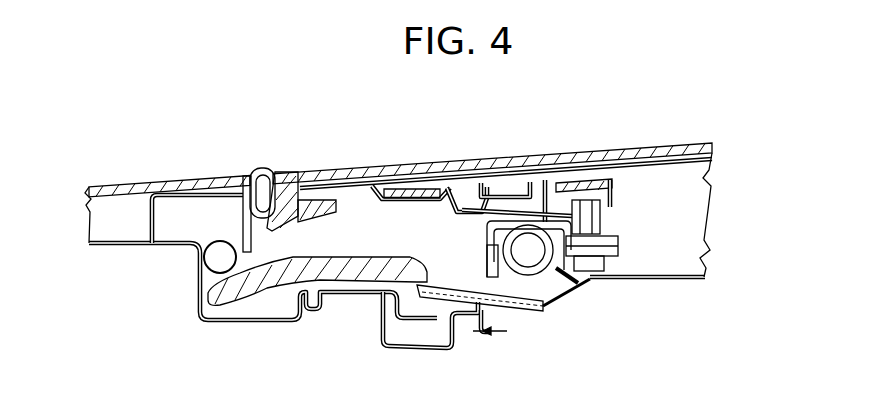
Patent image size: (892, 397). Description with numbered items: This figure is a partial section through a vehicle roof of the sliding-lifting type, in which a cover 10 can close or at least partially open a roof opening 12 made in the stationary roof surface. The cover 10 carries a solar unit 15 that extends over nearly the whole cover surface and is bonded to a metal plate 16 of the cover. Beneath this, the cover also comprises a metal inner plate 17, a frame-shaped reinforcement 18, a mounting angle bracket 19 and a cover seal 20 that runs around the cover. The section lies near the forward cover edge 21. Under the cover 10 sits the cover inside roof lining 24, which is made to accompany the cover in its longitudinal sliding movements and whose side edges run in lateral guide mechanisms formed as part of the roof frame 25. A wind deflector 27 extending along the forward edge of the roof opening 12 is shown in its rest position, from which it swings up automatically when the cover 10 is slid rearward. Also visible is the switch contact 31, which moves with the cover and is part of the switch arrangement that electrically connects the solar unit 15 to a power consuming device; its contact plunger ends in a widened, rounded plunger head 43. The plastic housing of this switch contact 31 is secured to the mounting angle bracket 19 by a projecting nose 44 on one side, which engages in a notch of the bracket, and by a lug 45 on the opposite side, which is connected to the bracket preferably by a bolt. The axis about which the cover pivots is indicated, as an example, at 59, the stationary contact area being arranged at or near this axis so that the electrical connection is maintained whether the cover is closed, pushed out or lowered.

The cover 10 is at (653, 140).
The roof opening 12 is at (776, 192).
The solar unit 15 is at (347, 158).
The metal plate 16 is at (417, 158).
The metal inner plate 17 is at (540, 158).
The frame-shaped reinforcement 18 is at (508, 158).
The mounting angle bracket 19 is at (473, 158).
The cover seal 20 is at (262, 160).
The forward cover edge 21 is at (303, 157).
The cover inside roof lining 24 is at (667, 283).
The roof frame 25 is at (407, 340).
The wind deflector 27 is at (342, 268).
The switch contact 31 is at (578, 283).
The plunger head 43 is at (528, 262).
The projecting nose 44 is at (488, 254).
The lug 45 is at (617, 238).
The cover pivot axis 59 is at (487, 334).